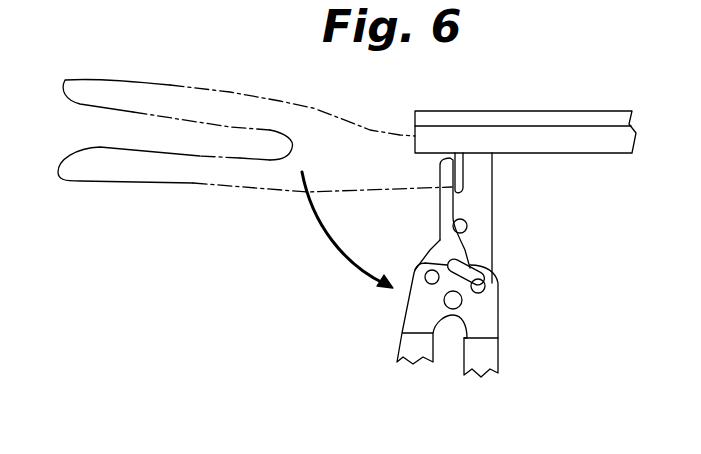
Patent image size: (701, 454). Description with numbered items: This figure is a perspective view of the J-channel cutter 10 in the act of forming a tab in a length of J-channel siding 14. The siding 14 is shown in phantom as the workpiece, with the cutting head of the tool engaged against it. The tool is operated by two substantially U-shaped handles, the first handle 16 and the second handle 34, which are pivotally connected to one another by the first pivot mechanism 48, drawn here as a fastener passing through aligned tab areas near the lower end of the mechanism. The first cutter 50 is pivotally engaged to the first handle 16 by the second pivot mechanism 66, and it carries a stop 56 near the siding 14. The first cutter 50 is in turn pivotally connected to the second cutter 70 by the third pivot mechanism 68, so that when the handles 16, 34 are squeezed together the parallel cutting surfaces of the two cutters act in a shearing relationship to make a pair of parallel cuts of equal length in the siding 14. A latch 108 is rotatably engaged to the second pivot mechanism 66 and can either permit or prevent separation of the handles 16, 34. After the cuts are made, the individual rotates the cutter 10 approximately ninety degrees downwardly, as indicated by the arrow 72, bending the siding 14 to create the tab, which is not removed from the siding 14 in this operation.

The J-channel cutter 10 is at (347, 130).
The second handle 34 is at (268, 60).
The first handle 16 is at (197, 180).
The J-channel siding 14 is at (532, 137).
The stop 56 is at (457, 176).
The first cutter 50 is at (483, 182).
The second cutter 70 is at (443, 207).
The third pivot mechanism 68 is at (462, 227).
The first pivot mechanism 48 is at (498, 322).
The latch 108 is at (467, 268).
The second pivot mechanism 66 is at (480, 287).
The arrow 72 is at (330, 243).